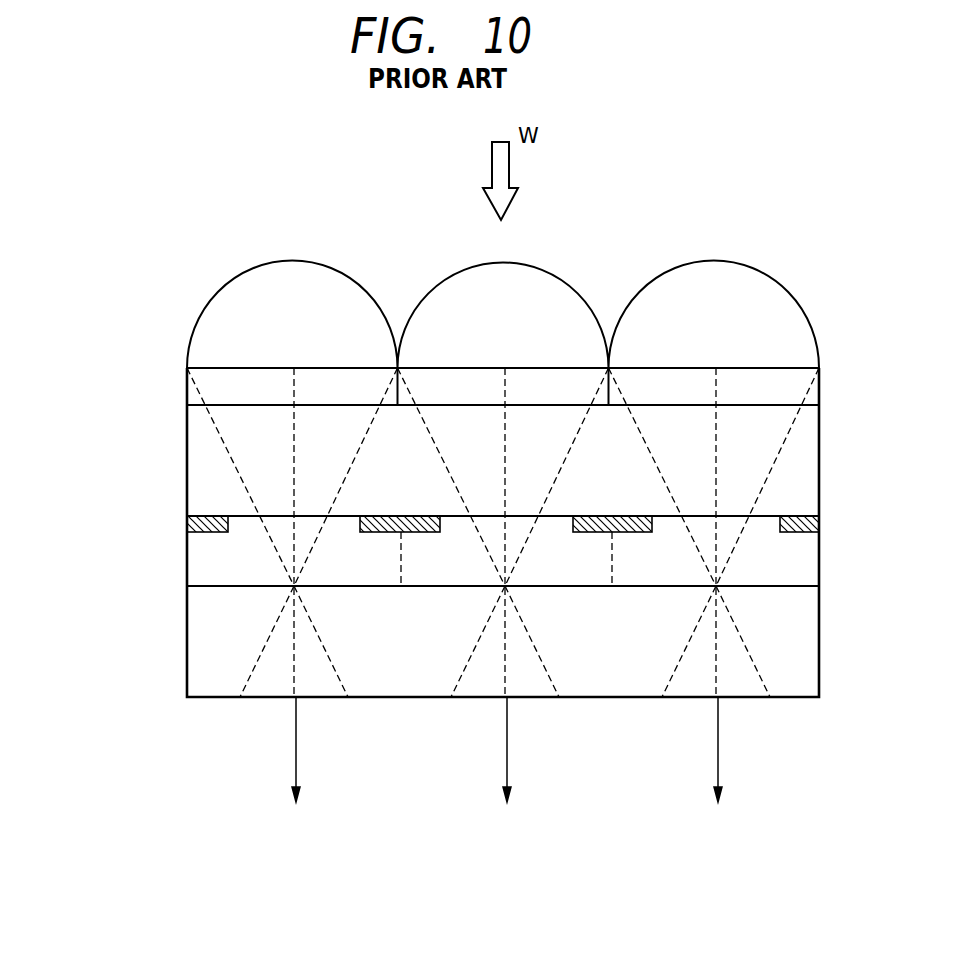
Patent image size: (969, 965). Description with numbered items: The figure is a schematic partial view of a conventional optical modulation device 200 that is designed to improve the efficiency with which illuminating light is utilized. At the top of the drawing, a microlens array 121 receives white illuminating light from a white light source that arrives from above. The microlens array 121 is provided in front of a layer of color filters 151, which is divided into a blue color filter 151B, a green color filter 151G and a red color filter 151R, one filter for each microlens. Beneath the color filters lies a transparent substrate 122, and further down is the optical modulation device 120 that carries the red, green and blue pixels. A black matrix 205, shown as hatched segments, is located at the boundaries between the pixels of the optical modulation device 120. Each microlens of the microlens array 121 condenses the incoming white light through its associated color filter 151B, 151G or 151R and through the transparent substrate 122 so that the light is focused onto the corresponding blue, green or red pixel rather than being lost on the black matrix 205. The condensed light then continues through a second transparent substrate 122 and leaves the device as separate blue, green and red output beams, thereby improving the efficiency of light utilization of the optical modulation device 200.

The optical modulation device 200 is at (110, 283).
The microlens array 121 is at (190, 339).
The color filters 151 is at (187, 390).
The blue color filter 151B is at (292, 386).
The green color filter 151G is at (503, 386).
The red color filter 151R is at (714, 386).
The transparent substrate 122 is at (187, 460).
The optical modulation device 120 is at (187, 561).
The black matrix 205 is at (819, 516).